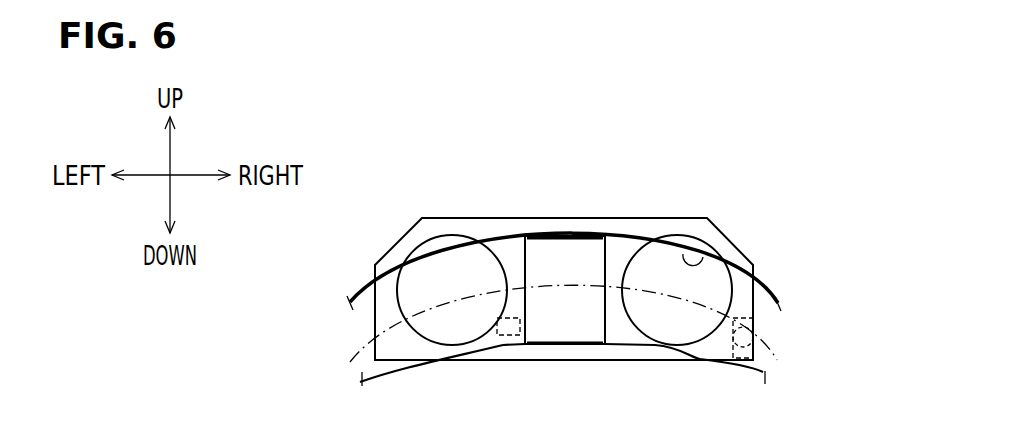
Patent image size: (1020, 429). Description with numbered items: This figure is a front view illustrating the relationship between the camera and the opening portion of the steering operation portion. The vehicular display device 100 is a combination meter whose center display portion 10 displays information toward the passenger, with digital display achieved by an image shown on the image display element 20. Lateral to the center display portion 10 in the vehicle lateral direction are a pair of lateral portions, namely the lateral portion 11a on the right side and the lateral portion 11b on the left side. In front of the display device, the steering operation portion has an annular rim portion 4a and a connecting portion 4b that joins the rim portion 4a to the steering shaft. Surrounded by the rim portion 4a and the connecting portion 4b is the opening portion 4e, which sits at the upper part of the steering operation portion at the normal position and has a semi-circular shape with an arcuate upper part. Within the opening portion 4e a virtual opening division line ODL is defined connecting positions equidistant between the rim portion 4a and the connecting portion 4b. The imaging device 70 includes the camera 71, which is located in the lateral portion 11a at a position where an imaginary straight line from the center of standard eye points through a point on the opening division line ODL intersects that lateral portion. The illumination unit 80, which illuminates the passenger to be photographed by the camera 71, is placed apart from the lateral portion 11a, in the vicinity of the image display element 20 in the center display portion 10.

The vehicular display device 100 is at (396, 192).
The center display portion 10 is at (660, 242).
The lateral portion 11a is at (743, 302).
The lateral portion 11b is at (388, 320).
The rim portion 4a is at (353, 303).
The connecting portion 4b is at (365, 369).
The opening portion 4e is at (703, 257).
The opening division line ODL is at (372, 344).
The image display element 20 is at (578, 346).
The illumination unit 80 is at (510, 337).
The imaging device 70 is at (753, 332).
The camera 71 is at (743, 337).